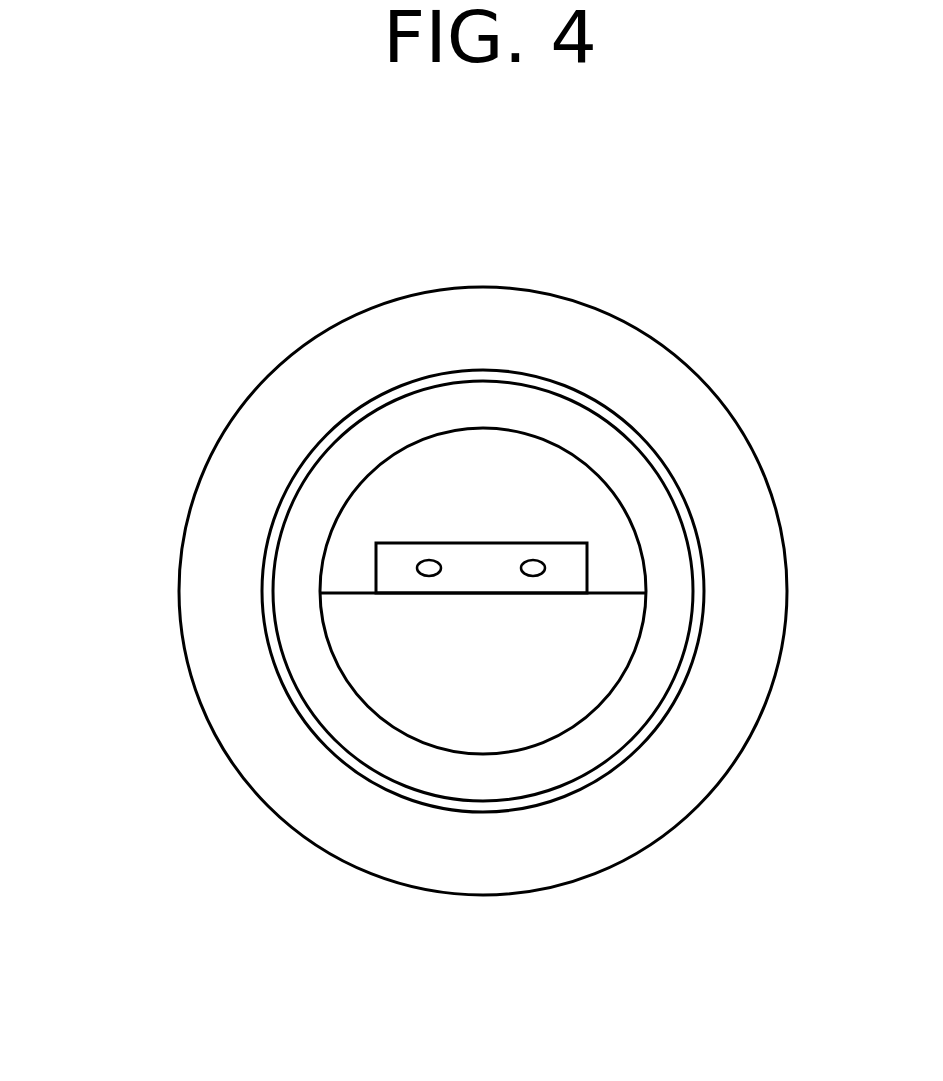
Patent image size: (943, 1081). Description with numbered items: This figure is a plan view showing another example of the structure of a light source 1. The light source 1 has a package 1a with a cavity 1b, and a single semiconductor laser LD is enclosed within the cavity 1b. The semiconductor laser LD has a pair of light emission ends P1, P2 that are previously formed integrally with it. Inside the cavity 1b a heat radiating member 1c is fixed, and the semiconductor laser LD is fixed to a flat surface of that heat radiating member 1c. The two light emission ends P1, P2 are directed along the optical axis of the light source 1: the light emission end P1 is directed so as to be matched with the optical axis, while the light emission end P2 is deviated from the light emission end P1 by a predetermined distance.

The light source 1 is at (687, 328).
The package 1a is at (272, 537).
The cavity 1b is at (390, 528).
The heat radiating member 1c is at (600, 683).
The semiconductor laser LD is at (467, 582).
The light emission end P1 is at (429, 560).
The light emission end P2 is at (533, 560).